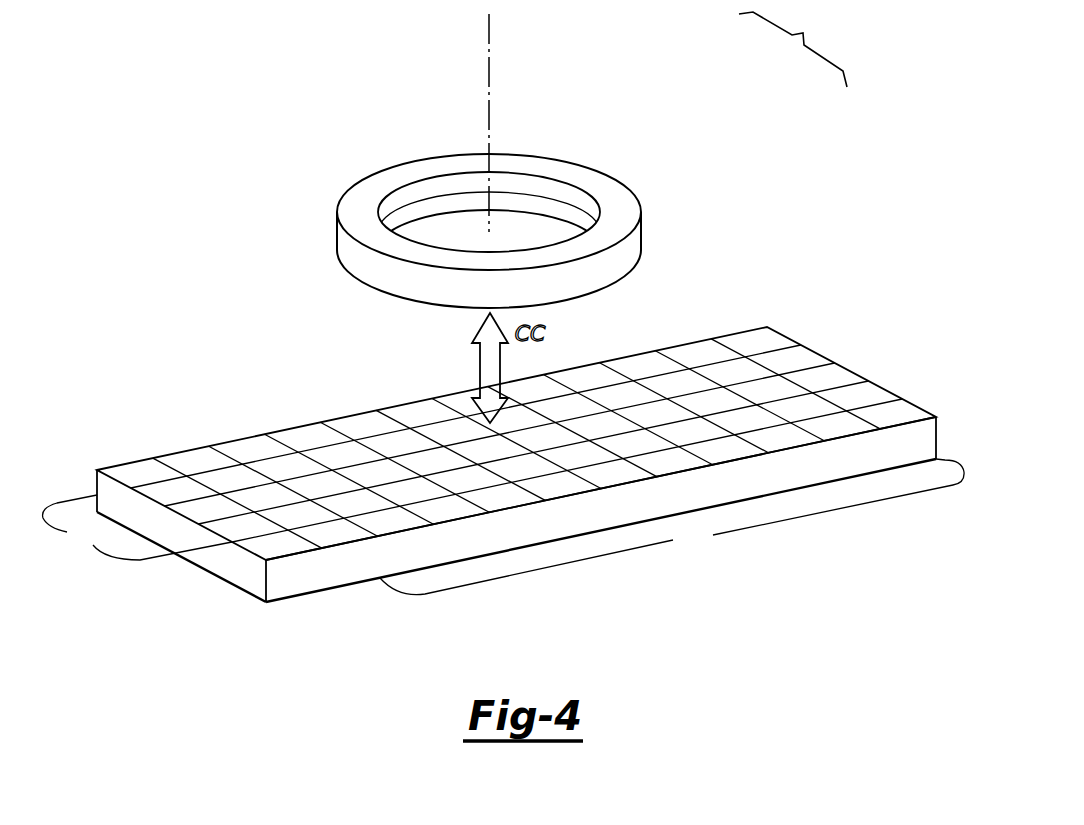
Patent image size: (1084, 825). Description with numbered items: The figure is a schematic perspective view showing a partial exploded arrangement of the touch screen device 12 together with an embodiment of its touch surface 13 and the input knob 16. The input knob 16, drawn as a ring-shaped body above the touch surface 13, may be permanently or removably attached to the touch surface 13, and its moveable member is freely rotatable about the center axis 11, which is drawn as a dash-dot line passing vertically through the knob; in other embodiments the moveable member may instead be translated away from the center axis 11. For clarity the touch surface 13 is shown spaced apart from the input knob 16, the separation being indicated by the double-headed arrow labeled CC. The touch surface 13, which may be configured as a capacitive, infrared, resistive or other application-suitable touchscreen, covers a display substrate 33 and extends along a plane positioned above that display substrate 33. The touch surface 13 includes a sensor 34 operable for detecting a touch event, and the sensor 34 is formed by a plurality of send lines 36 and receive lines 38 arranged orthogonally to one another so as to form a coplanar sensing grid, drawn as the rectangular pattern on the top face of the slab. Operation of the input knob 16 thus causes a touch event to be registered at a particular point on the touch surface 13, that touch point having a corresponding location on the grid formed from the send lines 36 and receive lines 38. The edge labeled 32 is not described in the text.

The center axis 11 is at (488, 50).
The touch screen device 12 is at (793, 47).
The touch surface 13 is at (151, 384).
The input knob 16 is at (684, 121).
The front edge of plate 32 is at (853, 438).
The display substrate 33 is at (308, 596).
The sensor 34 is at (833, 383).
The send lines 36 is at (672, 527).
The receive lines 38 is at (137, 527).